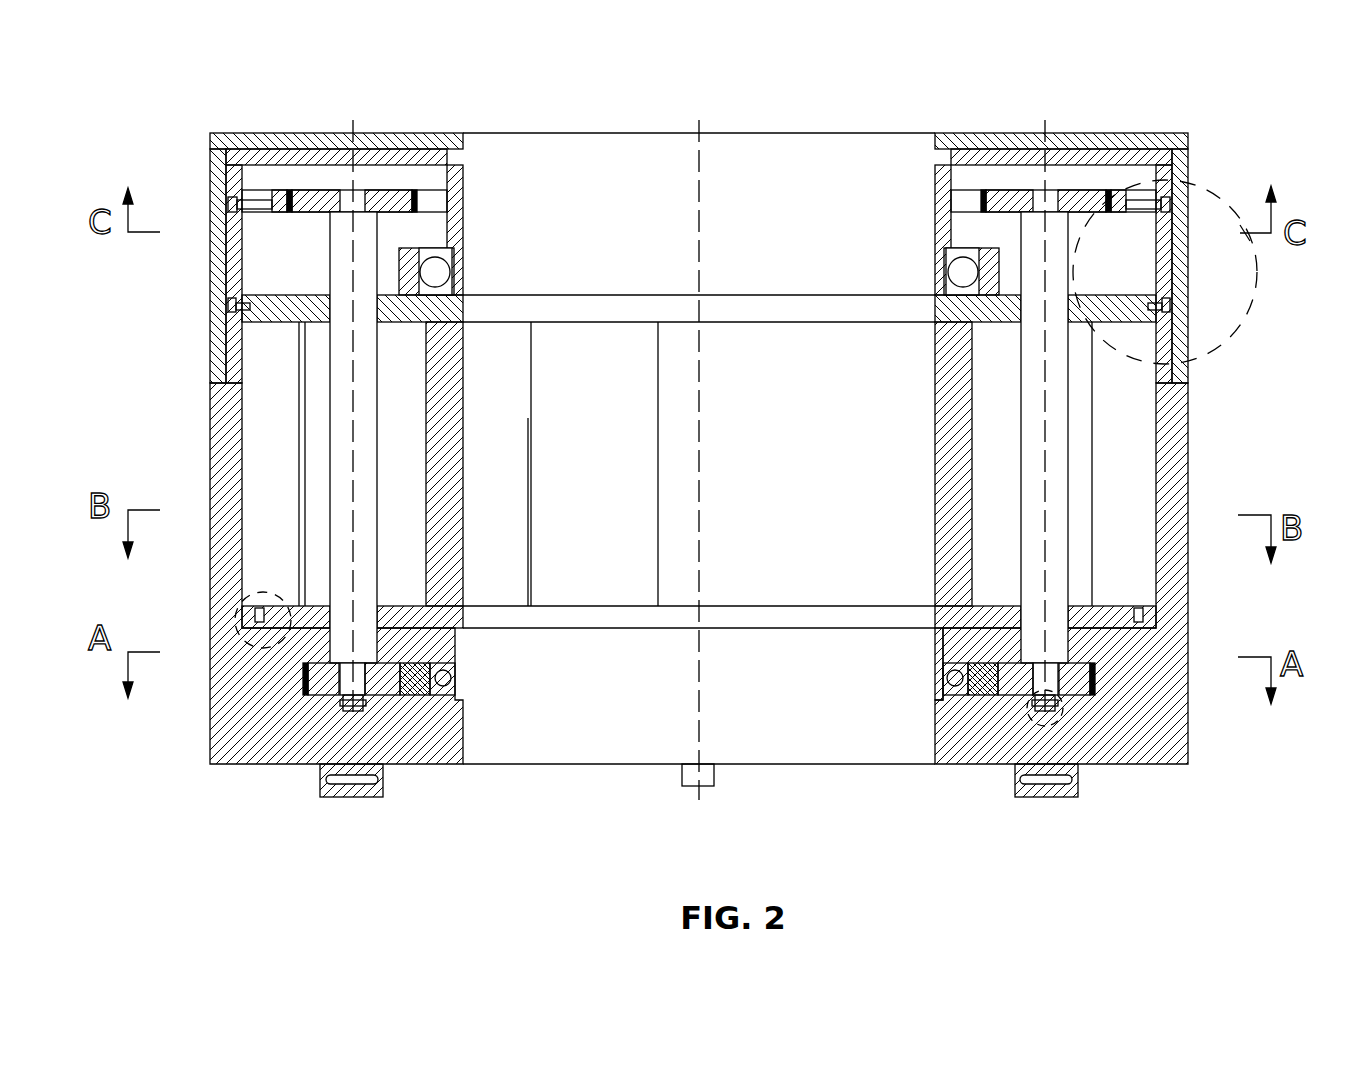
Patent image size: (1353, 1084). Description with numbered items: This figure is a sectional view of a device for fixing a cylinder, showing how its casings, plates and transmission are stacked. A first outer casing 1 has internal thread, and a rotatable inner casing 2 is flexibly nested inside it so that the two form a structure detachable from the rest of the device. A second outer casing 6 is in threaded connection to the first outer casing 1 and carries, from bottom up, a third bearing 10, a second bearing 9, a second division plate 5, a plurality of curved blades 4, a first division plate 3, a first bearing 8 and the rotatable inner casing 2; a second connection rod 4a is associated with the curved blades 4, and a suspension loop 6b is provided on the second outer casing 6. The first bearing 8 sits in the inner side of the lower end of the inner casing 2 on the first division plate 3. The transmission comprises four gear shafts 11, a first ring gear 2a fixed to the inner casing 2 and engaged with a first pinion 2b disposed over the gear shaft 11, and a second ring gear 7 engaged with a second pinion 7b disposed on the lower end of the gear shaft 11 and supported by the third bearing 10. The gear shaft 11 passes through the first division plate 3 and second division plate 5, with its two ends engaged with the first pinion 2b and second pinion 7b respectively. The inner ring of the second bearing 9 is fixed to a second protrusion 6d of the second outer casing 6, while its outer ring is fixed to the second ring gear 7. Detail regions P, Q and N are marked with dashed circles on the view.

The first outer casing 1 is at (222, 173).
The rotatable inner casing 2 is at (272, 158).
The first ring gear 2a is at (1118, 193).
The first pinion 2b is at (998, 197).
The first division plate 3 is at (290, 303).
The curved blade 4 is at (450, 433).
The second connection rod 4a is at (1085, 530).
The second division plate 5 is at (1097, 615).
The second outer casing 6 is at (224, 484).
The suspension loop 6b is at (1067, 797).
The second protrusion 6d is at (937, 697).
The second ring gear 7 is at (990, 692).
The second pinion 7b is at (315, 677).
The first bearing 8 is at (435, 265).
The second bearing 9 is at (442, 687).
The third bearing 10 is at (1067, 708).
The gear shaft 11 is at (1052, 386).
The detail P is at (224, 608).
The detail Q is at (1058, 717).
The detail N is at (1247, 327).